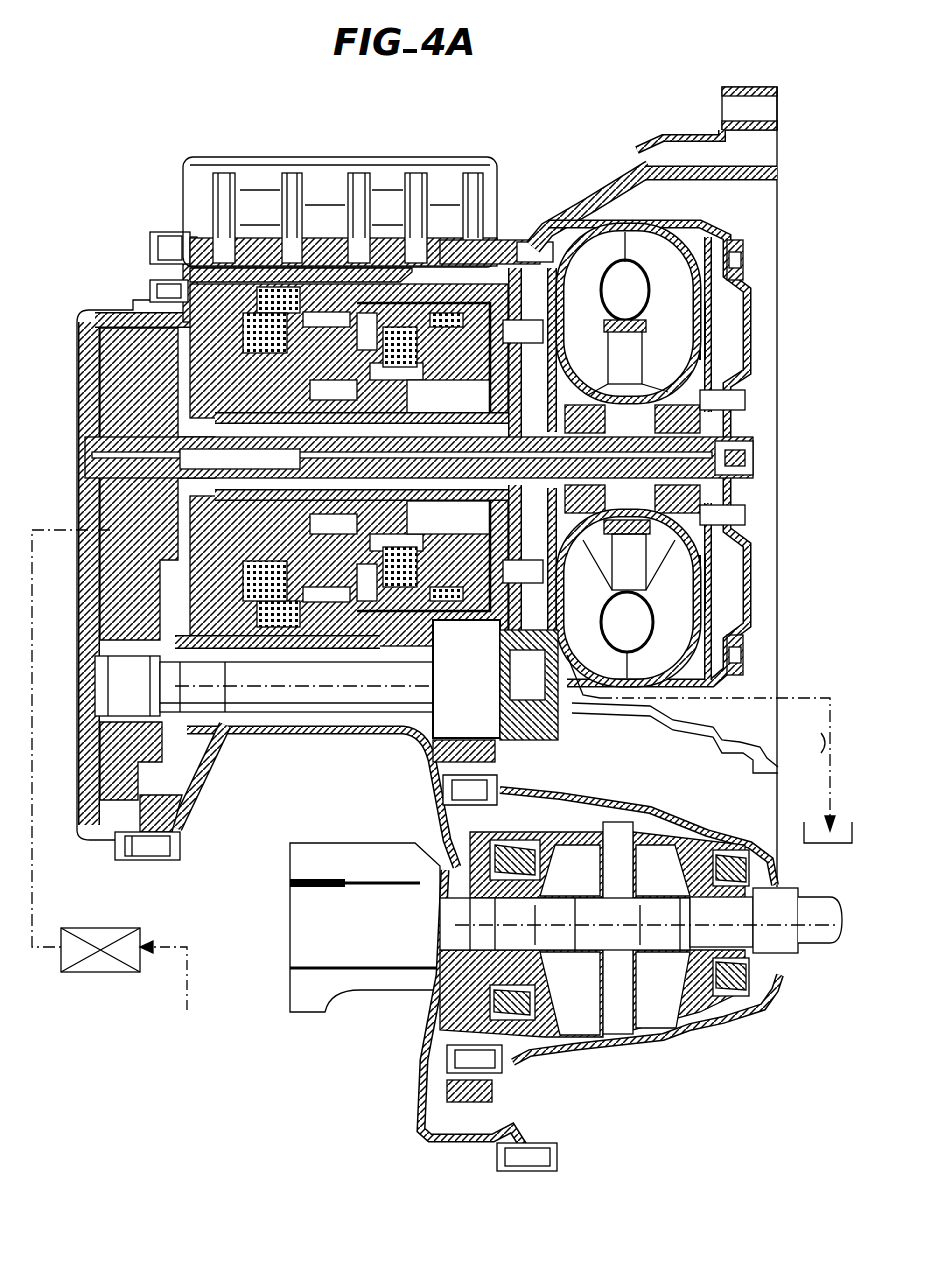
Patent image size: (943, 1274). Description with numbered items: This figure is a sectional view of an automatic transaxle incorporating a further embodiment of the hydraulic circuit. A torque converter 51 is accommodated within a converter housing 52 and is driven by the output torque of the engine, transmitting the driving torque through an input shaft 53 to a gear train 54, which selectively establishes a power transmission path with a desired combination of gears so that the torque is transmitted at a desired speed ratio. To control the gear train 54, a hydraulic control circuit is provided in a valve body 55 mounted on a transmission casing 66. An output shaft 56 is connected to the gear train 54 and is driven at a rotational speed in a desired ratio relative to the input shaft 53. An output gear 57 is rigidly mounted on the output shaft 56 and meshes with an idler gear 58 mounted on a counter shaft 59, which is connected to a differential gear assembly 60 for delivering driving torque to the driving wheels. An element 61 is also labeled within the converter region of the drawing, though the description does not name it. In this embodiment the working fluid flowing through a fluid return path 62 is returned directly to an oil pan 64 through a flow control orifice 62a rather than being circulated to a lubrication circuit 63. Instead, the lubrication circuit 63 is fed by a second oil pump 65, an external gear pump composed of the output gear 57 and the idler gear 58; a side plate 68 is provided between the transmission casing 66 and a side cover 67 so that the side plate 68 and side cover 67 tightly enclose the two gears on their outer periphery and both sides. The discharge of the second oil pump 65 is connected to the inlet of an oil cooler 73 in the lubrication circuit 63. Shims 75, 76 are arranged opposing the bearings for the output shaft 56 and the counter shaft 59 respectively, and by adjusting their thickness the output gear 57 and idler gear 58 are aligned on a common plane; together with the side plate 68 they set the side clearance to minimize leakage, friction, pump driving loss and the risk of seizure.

The torque converter 51 is at (615, 210).
The converter housing 52 is at (667, 136).
The input shaft 53 is at (737, 437).
The gear train 54 is at (438, 282).
The valve body 55 is at (260, 190).
The output shaft 56 is at (82, 435).
The output gear 57 is at (93, 312).
The idler gear 58 is at (100, 817).
The counter shaft 59 is at (338, 704).
The differential gear assembly 60 is at (583, 1040).
The hydraulic coupling 61 is at (612, 345).
The fluid return path 62 is at (800, 698).
The flow control orifice 62a is at (835, 752).
The lubrication circuit 63 is at (80, 482).
The oil pan 64 is at (834, 845).
The second oil pump 65 is at (177, 1042).
The transmission casing 66 is at (182, 792).
The side cover 67 is at (128, 856).
The side plate 68 is at (183, 817).
The oil cooler 73 is at (98, 972).
The shim 75 is at (150, 318).
The shim 76 is at (558, 738).